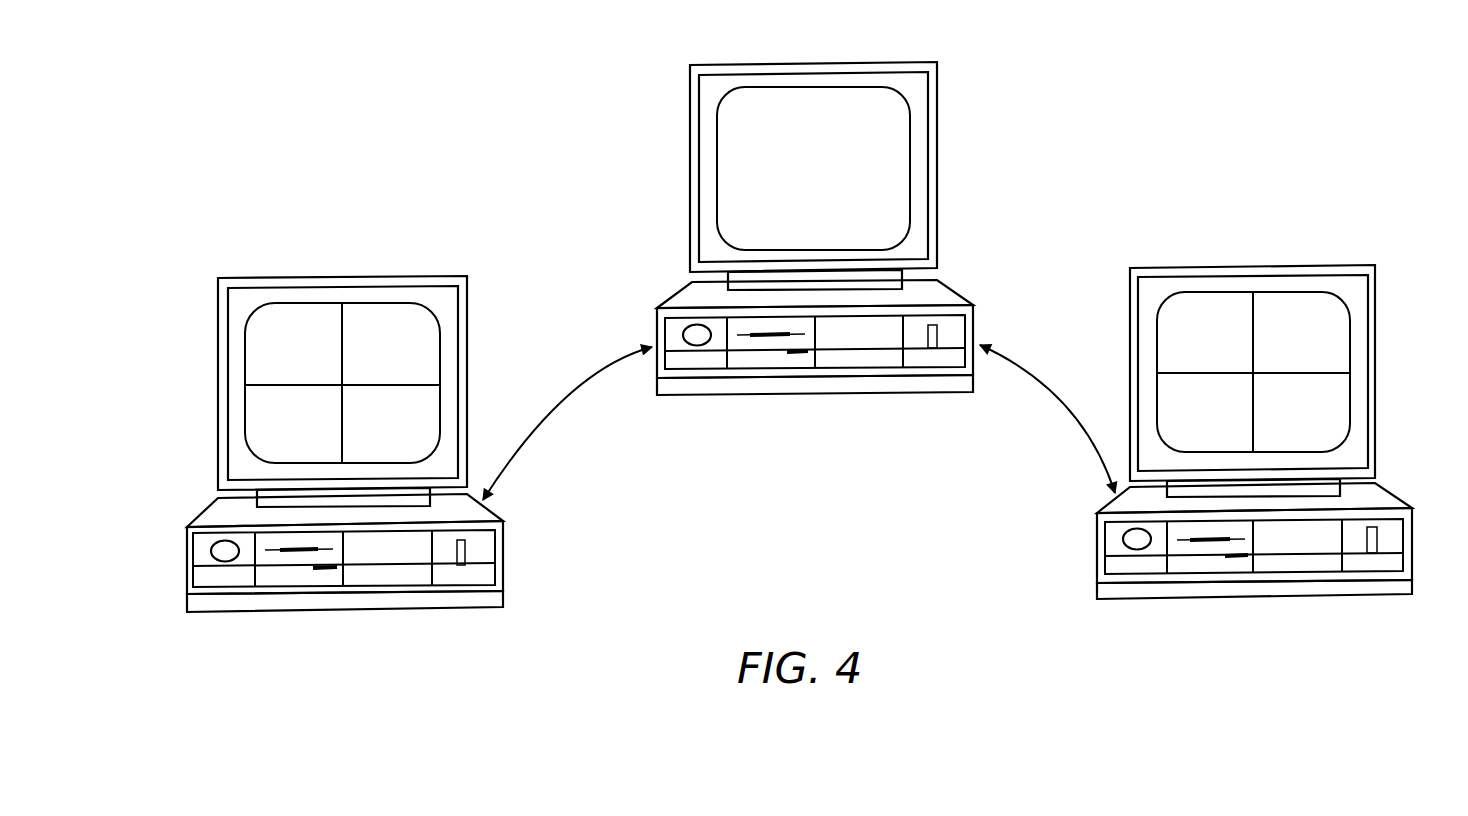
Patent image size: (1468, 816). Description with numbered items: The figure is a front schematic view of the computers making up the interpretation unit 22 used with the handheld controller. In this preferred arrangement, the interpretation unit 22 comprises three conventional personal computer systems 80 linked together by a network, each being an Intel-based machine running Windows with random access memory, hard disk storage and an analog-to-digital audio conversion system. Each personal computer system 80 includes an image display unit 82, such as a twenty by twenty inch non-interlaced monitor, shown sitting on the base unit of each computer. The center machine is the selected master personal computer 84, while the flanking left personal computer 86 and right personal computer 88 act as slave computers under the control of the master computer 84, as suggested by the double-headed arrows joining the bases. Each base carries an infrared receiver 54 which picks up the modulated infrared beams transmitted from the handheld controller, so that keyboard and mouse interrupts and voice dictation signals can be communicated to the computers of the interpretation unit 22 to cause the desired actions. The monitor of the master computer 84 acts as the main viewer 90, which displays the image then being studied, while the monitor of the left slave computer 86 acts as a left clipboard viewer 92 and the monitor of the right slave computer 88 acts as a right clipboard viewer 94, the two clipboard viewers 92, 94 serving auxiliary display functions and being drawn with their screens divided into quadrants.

The interpretation unit 22 is at (1012, 118).
The infrared receiver 54 is at (223, 548).
The personal computer system 80 is at (186, 555).
The image display unit 82 is at (798, 76).
The master personal computer 84 is at (840, 393).
The left personal computer 86 is at (505, 602).
The right personal computer 88 is at (1303, 597).
The main viewer 90 is at (735, 128).
The left clipboard viewer 92 is at (275, 322).
The right clipboard viewer 94 is at (1198, 322).